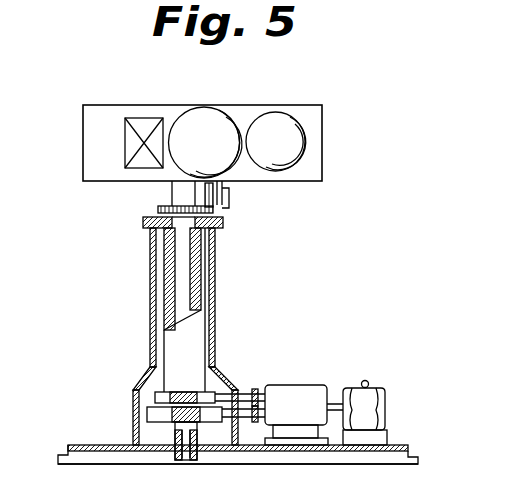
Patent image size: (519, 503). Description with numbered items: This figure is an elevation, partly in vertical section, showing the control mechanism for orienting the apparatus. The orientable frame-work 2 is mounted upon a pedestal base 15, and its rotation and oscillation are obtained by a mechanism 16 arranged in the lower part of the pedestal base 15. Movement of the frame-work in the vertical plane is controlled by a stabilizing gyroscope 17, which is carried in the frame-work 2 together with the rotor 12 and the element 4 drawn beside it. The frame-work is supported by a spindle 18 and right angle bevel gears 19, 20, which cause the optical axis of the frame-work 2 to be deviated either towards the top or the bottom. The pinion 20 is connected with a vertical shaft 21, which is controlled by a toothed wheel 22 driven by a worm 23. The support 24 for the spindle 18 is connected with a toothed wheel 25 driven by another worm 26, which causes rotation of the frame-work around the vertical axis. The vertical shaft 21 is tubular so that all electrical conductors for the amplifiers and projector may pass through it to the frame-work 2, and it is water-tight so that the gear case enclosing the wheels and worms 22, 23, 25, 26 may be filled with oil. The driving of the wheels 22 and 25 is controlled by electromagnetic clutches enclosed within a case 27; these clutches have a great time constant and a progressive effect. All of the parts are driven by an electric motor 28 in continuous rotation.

The orientable frame-work 2 is at (322, 166).
The gyroscope rotor 4 is at (277, 112).
The gyroscope rotor 12 is at (204, 107).
The pedestal base 15 is at (152, 294).
The mechanism 16 is at (137, 430).
The stabilizing gyroscope 17 is at (144, 118).
The spindle 18 is at (228, 200).
The right angle bevel gear 19 is at (222, 193).
The pinion 20 is at (169, 200).
The vertical shaft 21 is at (166, 253).
The toothed wheel 22 is at (150, 408).
The worm 23 is at (194, 425).
The support 24 is at (200, 275).
The toothed wheel 25 is at (150, 385).
The worm 26 is at (184, 392).
The case 27 is at (332, 356).
The electric motor 28 is at (373, 392).